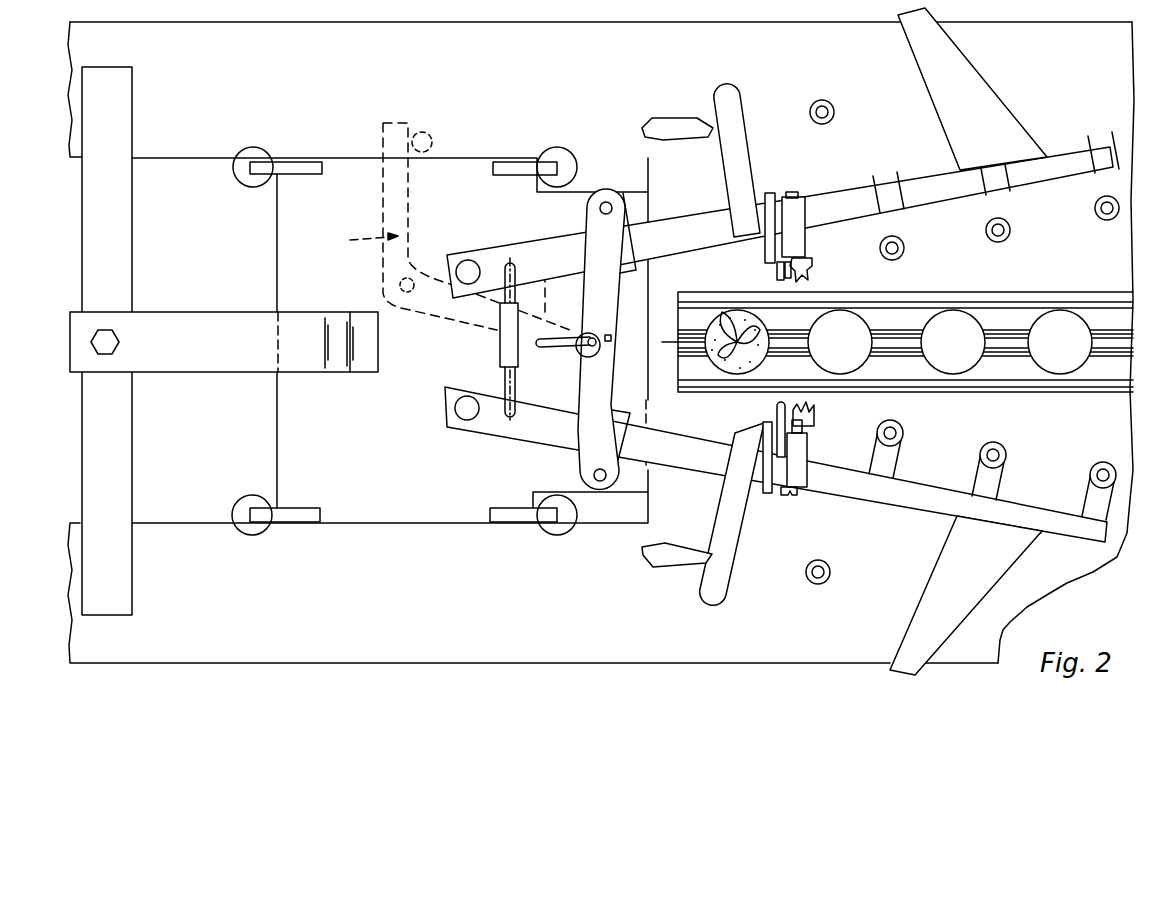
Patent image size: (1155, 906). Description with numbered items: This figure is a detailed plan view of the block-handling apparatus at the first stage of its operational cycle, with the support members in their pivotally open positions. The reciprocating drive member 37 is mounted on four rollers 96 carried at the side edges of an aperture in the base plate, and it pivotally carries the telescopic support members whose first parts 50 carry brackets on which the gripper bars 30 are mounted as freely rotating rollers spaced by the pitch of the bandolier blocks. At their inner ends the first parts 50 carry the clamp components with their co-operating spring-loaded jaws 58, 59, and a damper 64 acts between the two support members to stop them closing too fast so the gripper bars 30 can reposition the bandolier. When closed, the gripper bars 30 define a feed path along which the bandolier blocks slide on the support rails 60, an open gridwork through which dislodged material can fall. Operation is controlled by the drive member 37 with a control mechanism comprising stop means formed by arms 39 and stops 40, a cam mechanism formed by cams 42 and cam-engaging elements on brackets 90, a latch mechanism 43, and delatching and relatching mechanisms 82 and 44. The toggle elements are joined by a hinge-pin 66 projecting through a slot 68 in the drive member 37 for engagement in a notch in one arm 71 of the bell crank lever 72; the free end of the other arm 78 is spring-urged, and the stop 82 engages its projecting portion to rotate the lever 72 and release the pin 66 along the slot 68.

The gripper bars 30 is at (1094, 466).
The drive member 37 is at (406, 484).
The arms 39 is at (945, 585).
The stops 40 is at (828, 103).
The cams 42 is at (670, 122).
The latch mechanism 43 is at (590, 320).
The relatching mechanism 44 is at (222, 330).
The first parts 50 is at (1073, 152).
The spring-loaded jaw 58 is at (813, 268).
The spring-loaded jaw 59 is at (817, 418).
The support rails 60 is at (1008, 280).
The damper 64 is at (500, 338).
The hinge-pin 66 is at (600, 347).
The slot 68 is at (538, 350).
The arm 71 is at (780, 222).
The bell crank lever 72 is at (356, 241).
The other arm 78 is at (380, 147).
The stop 82 is at (433, 138).
The brackets 90 is at (735, 130).
The rollers 96 is at (578, 138).